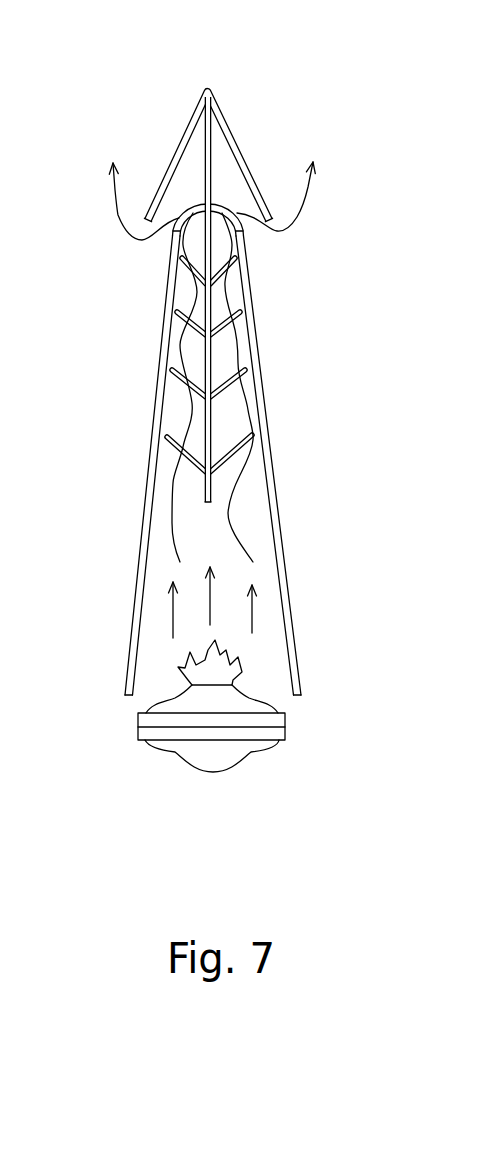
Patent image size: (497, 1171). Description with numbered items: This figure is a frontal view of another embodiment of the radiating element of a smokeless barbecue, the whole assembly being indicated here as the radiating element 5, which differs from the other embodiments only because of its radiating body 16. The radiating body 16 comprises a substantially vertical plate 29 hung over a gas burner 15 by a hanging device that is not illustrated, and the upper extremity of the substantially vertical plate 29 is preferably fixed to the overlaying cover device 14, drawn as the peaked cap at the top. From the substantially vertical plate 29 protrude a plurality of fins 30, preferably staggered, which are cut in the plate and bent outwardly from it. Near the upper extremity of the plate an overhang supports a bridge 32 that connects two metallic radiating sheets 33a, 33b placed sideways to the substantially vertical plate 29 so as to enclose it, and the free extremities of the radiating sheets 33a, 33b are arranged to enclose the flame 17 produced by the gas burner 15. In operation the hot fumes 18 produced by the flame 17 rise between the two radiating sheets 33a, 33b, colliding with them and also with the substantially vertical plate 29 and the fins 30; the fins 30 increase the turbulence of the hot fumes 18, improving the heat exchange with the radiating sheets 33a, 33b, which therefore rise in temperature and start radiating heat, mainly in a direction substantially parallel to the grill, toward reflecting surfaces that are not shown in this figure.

The heating device 5 is at (300, 462).
The cover device 14 is at (233, 117).
The gas burner 15 is at (158, 761).
The radiating body 16 is at (300, 400).
The flame 17 is at (242, 672).
The hot fumes 18 is at (118, 215).
The substantially vertical plate 29 is at (205, 490).
The fins 30 is at (177, 322).
The bridge 32 is at (195, 204).
The radiating sheet 33a is at (300, 648).
The radiating sheet 33b is at (125, 668).